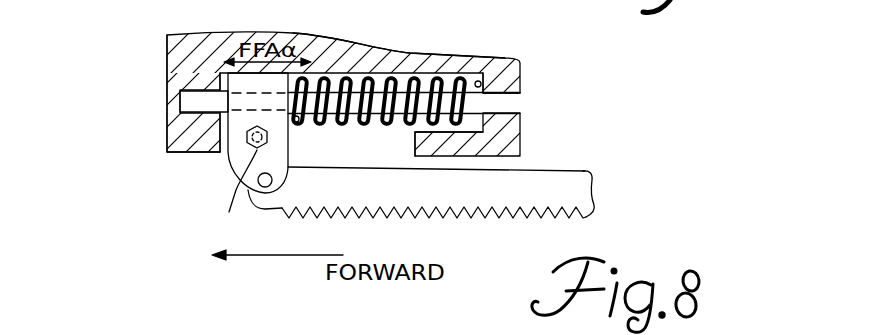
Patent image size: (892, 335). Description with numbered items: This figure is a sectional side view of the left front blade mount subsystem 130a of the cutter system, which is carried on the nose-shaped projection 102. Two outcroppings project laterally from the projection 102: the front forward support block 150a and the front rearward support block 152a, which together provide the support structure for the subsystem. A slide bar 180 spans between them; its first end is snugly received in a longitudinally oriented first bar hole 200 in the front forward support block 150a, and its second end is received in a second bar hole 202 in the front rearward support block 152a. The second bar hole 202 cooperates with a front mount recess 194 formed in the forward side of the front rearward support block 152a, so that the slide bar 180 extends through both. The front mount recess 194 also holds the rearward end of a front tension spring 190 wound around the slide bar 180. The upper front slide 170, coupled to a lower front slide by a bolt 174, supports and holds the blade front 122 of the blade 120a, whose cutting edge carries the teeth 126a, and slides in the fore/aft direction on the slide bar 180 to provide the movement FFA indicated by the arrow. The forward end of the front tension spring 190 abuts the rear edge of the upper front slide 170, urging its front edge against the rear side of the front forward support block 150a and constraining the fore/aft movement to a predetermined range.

The left front blade mount subsystem 130a is at (148, 47).
The projection 102 is at (367, 57).
The first bar hole 200 is at (180, 113).
The front forward support block 150a is at (172, 152).
The second bar hole 202 is at (520, 70).
The slide bar 180 is at (520, 100).
The front rearward support block 152a is at (520, 132).
The front mount recess 194 is at (463, 132).
The upper front slide 170 is at (227, 167).
The bolt 174 is at (233, 185).
The front tension spring 190 is at (395, 118).
The blade front 122 is at (363, 198).
The blade 120a is at (583, 170).
The teeth 126a is at (386, 228).